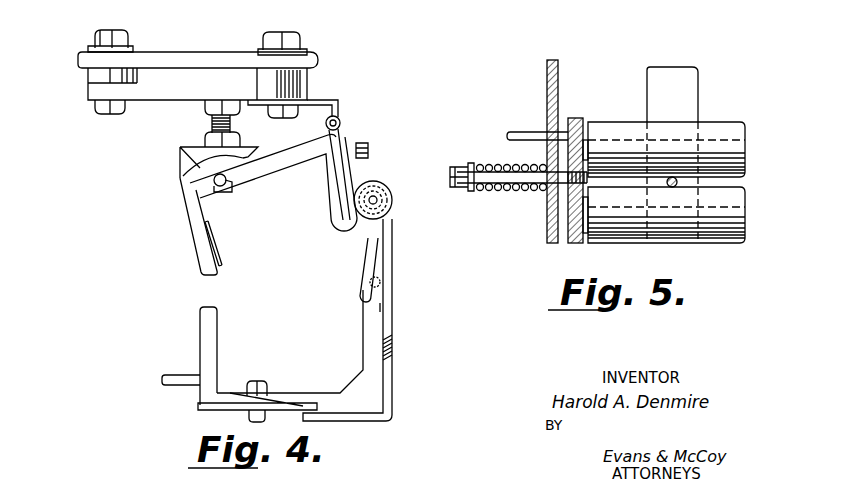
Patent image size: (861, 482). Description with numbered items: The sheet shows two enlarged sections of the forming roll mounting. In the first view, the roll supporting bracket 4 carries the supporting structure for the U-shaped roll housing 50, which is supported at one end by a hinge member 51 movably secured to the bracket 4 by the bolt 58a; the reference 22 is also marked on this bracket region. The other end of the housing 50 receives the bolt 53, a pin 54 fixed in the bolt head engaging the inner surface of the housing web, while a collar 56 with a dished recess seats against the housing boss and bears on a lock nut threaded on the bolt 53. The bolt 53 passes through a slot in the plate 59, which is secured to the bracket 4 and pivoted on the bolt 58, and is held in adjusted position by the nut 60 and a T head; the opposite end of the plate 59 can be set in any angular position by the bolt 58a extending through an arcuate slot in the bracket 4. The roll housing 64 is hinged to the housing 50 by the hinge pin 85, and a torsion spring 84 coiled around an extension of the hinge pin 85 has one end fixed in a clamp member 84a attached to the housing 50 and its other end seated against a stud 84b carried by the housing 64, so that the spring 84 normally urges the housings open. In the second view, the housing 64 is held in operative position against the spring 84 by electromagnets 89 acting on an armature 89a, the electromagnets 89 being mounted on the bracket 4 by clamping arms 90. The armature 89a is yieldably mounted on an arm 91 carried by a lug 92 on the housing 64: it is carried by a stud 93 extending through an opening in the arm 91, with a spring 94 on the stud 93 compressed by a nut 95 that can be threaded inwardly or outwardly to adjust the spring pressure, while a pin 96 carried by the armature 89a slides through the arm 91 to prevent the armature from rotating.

In FIG. 4, the roll supporting bracket 4 is at (171, 58).
In FIG. 4, the mounting bar 22 is at (205, 17).
In FIG. 4, the U-shaped roll housing 50 is at (192, 214).
In FIG. 4, the hinge member 51 is at (340, 103).
In FIG. 4, the bolt 53 is at (207, 119).
In FIG. 4, the pin 54 is at (226, 190).
In FIG. 4, the collar 56 is at (190, 154).
In FIG. 4, the bolt 58 is at (112, 29).
In FIG. 4, the bolt 58a is at (292, 31).
In FIG. 4, the plate 59 is at (96, 90).
In FIG. 4, the nut 60 is at (240, 105).
In FIG. 4, the roll housing 64 is at (393, 357).
In FIG. 4, the torsion spring 84 is at (377, 261).
In FIG. 4, the clamp member 84a is at (368, 150).
In FIG. 4, the stud 84b is at (381, 284).
In FIG. 4, the hinge pin 85 is at (383, 190).
In FIG. 5, the electromagnets 89 is at (740, 141).
In FIG. 5, the armature 89a is at (577, 119).
In FIG. 5, the clamping arms 90 is at (690, 90).
In FIG. 5, the arm 91 is at (547, 86).
In FIG. 4, the lug 92 is at (178, 375).
In FIG. 5, the stud 93 is at (510, 190).
In FIG. 5, the spring 94 is at (494, 191).
In FIG. 5, the nut 95 is at (466, 166).
In FIG. 5, the pin 96 is at (520, 132).